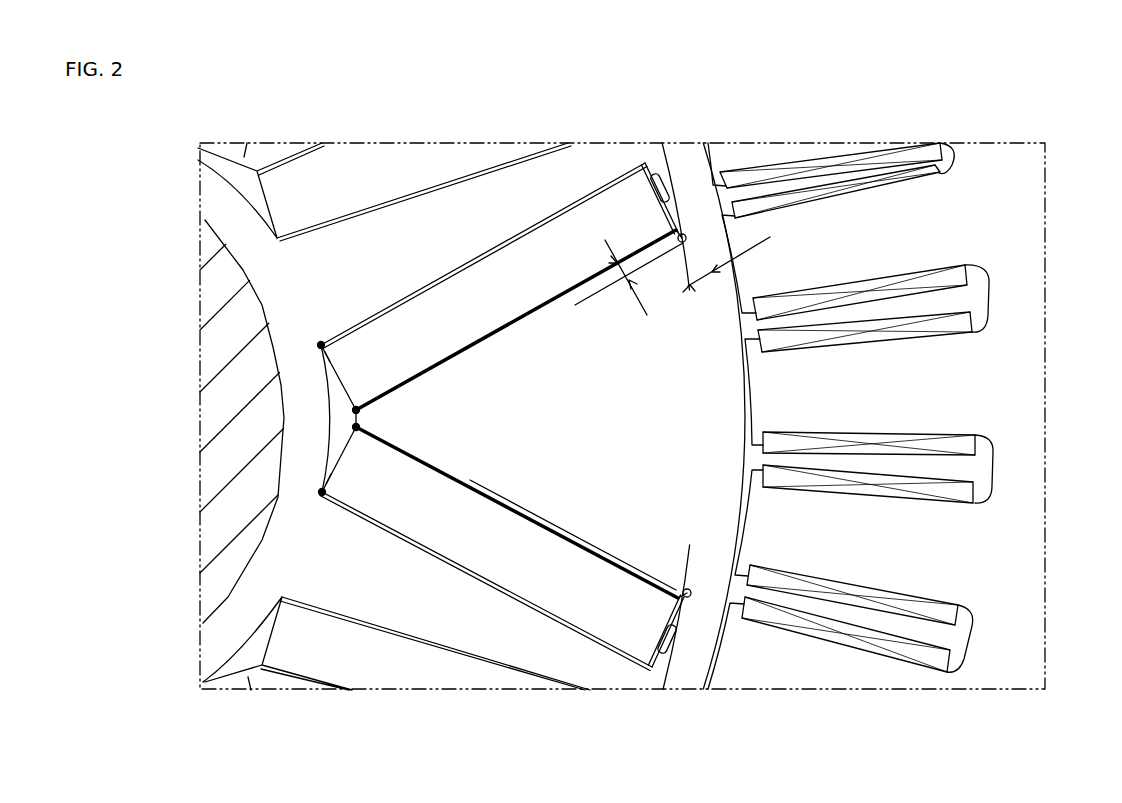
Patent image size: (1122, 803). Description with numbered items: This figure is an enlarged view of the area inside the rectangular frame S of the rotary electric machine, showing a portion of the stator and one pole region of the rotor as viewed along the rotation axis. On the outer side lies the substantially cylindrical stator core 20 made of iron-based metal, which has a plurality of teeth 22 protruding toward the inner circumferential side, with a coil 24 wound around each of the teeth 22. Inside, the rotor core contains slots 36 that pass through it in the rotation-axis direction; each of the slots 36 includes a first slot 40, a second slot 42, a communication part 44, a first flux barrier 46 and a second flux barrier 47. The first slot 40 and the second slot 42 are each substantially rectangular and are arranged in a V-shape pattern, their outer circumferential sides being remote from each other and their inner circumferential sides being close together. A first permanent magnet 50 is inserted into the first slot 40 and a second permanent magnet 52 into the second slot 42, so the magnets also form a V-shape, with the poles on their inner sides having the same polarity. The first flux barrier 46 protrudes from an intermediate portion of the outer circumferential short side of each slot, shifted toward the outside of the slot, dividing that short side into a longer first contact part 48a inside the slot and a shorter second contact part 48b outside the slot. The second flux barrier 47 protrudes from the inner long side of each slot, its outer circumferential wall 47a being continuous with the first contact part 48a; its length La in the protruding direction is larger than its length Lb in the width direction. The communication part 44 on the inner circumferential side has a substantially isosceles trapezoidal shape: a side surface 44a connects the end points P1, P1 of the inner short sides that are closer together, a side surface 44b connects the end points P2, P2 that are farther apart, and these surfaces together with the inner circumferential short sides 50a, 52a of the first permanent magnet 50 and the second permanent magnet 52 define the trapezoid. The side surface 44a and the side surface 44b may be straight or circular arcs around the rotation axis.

The stator core 20 is at (890, 416).
The teeth 22 is at (775, 515).
The coil 24 is at (752, 473).
The slots 36 is at (606, 374).
The first slot 40 is at (550, 240).
The second slot 42 is at (553, 616).
The communication part 44 is at (330, 417).
The side surface 44a is at (354, 409).
The side surface 44b is at (338, 447).
The first flux barrier 46 is at (668, 170).
The second flux barrier 47 is at (685, 243).
The outer circumferential wall 47a is at (683, 240).
The first contact part 48a is at (648, 200).
The second contact part 48b is at (632, 178).
The first permanent magnet 50 is at (463, 283).
The inner circumferential short side 50a is at (337, 386).
The second permanent magnet 52 is at (467, 566).
The inner circumferential short side 52a is at (338, 455).
The length of the second flux barrier in the protruding direction La is at (634, 277).
The length of the second flux barrier in the width direction Lb is at (726, 259).
The end points P1 is at (359, 412).
The end points P2 is at (322, 343).
The rectangular frame S is at (1052, 194).